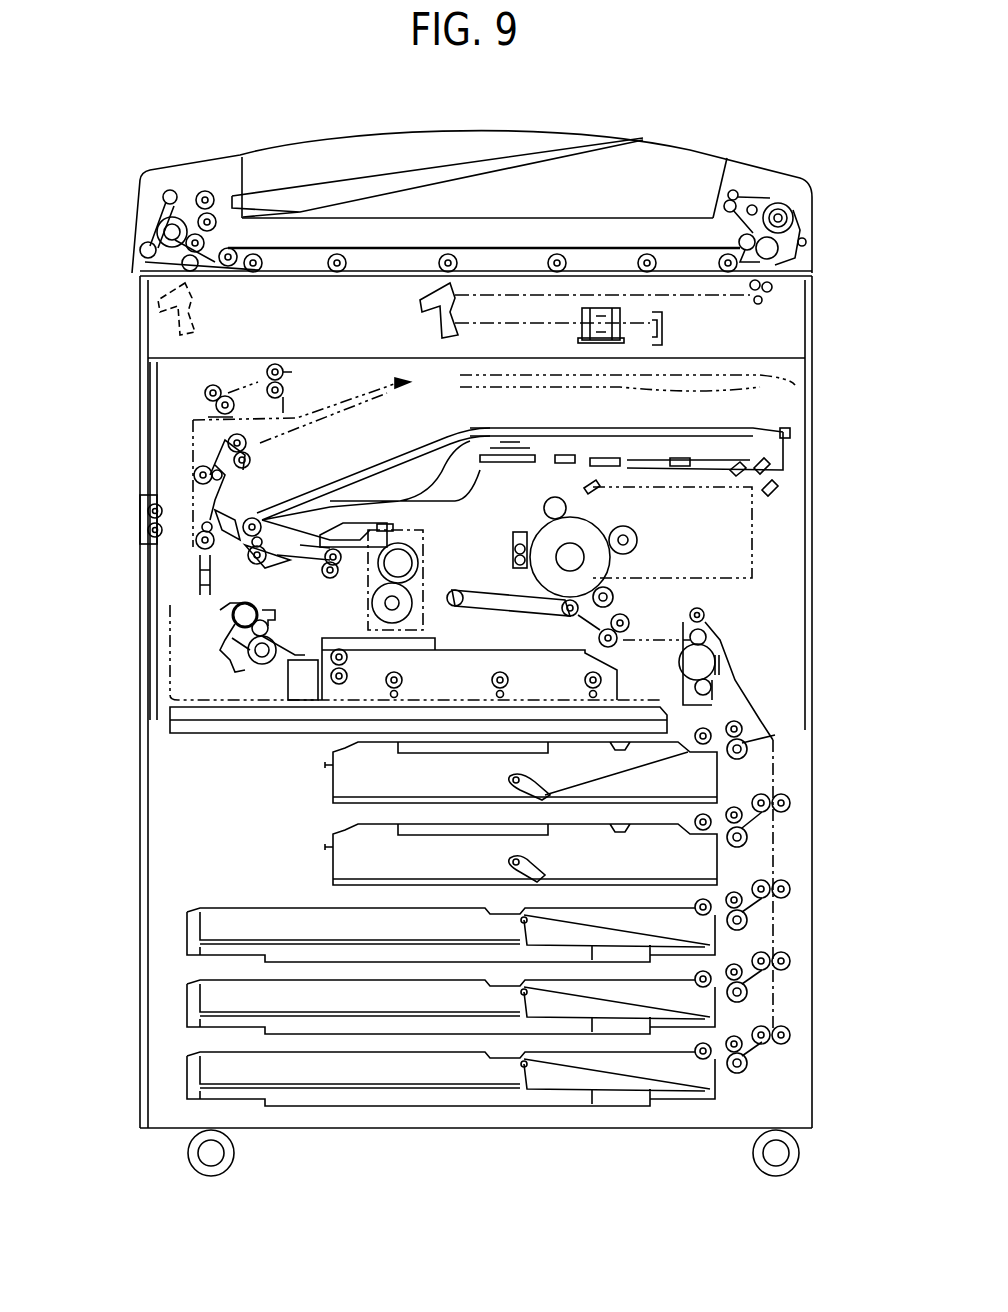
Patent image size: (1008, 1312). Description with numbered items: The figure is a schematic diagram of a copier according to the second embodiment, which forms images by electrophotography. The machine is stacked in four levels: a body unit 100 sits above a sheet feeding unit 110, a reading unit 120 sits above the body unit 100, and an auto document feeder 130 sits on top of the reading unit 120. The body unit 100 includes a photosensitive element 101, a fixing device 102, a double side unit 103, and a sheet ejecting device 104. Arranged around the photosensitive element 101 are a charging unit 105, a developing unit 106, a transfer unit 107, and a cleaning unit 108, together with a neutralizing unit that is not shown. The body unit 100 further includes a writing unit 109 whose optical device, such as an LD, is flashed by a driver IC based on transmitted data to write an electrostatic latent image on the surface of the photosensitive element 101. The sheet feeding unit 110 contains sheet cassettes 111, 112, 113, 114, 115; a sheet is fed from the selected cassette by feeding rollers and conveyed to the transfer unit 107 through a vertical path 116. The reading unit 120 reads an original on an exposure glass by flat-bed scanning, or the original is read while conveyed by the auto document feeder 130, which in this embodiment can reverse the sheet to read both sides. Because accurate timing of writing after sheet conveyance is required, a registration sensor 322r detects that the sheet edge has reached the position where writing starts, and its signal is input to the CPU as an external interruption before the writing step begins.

The body unit 100 is at (110, 366).
The photosensitive element 101 is at (542, 520).
The fixing device 102 is at (405, 530).
The double side unit 103 is at (450, 660).
The sheet ejecting device 104 is at (206, 420).
The charging unit 105 is at (555, 500).
The developing unit 106 is at (637, 545).
The transfer unit 107 is at (577, 618).
The cleaning unit 108 is at (516, 548).
The writing unit 109 is at (785, 445).
The sheet feeding unit 110 is at (110, 736).
The sheet cassette 111 is at (333, 778).
The sheet cassette 112 is at (333, 860).
The sheet cassette 113 is at (205, 916).
The sheet cassette 114 is at (205, 988).
The sheet cassette 115 is at (205, 1060).
The vertical path 116 is at (785, 755).
The reading unit 120 is at (110, 282).
The auto document feeder 130 is at (110, 172).
The registration sensor 322r is at (642, 634).